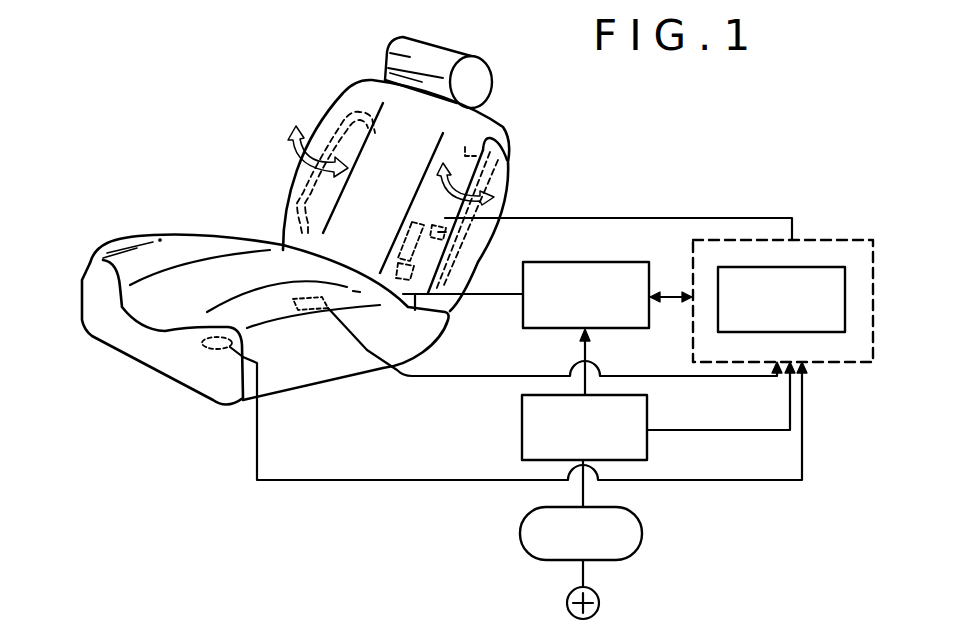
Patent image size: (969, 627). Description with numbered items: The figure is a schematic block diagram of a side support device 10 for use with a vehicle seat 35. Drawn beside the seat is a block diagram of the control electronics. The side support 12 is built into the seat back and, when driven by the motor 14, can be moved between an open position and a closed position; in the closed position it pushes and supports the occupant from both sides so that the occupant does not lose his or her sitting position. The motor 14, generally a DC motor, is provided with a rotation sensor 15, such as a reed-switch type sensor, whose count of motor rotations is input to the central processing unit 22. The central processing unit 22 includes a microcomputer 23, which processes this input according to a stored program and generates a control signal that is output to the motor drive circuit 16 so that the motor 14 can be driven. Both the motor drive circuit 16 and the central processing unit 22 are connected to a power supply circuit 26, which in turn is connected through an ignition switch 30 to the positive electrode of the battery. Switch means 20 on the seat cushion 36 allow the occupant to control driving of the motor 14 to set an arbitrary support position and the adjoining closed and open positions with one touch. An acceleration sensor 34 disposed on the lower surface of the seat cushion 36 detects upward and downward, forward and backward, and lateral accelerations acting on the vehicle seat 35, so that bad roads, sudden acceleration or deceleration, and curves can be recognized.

The side support device 10 is at (773, 189).
The side support 12 is at (498, 164).
The motor 14 is at (418, 219).
The rotation sensor 15 is at (452, 240).
The motor drive circuit 16 is at (627, 277).
The switch means 20 is at (330, 312).
The central processing unit 22 is at (863, 243).
The microcomputer 23 is at (831, 276).
The power supply circuit 26 is at (647, 450).
The ignition switch 30 is at (642, 533).
The acceleration sensor 34 is at (207, 347).
The vehicle seat 35 is at (296, 100).
The seat cushion 36 is at (162, 238).